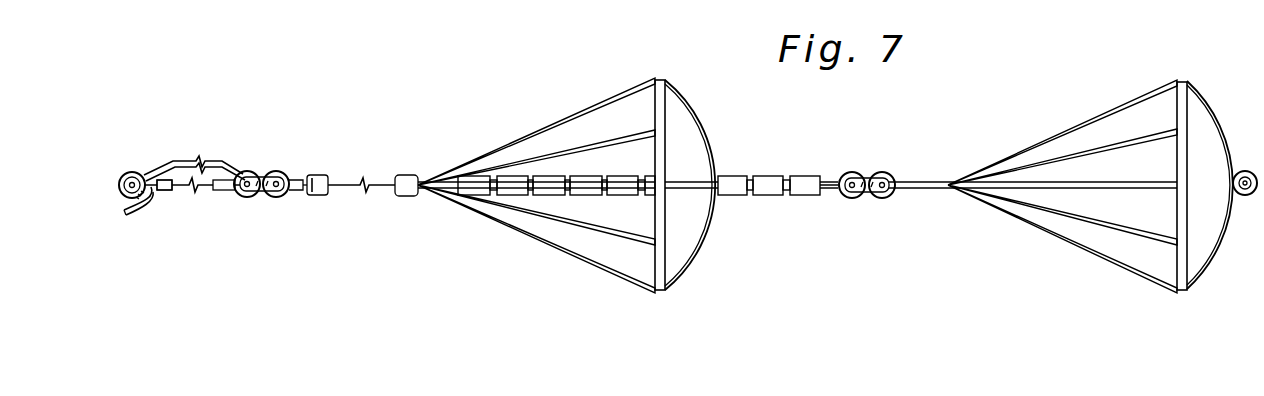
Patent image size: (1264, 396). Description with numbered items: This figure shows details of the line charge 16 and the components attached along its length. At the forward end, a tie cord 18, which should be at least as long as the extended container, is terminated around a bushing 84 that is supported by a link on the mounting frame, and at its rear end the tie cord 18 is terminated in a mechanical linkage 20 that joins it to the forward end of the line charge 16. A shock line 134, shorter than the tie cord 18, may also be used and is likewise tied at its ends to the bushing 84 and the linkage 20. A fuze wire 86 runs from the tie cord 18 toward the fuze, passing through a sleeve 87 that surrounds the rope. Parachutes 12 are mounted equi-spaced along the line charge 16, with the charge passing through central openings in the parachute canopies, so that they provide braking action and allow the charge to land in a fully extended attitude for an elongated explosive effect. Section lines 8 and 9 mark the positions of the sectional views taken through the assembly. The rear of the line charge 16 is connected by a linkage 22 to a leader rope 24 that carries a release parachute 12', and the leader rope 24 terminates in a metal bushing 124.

The parachute 12 is at (569, 185).
The release parachute 12' is at (1098, 186).
The bushing 84 is at (131, 172).
The shock line 134 is at (174, 165).
The tie cord 18 is at (129, 199).
The fuze wire 86 is at (146, 213).
The sleeve 87 is at (165, 192).
The mechanical linkage 20 is at (259, 203).
The section line 8 is at (437, 148).
The line charge 16 is at (812, 199).
The section line 9 is at (736, 233).
The linkage 22 is at (862, 200).
The leader rope 24 is at (930, 182).
The metal bushing 124 is at (1244, 196).